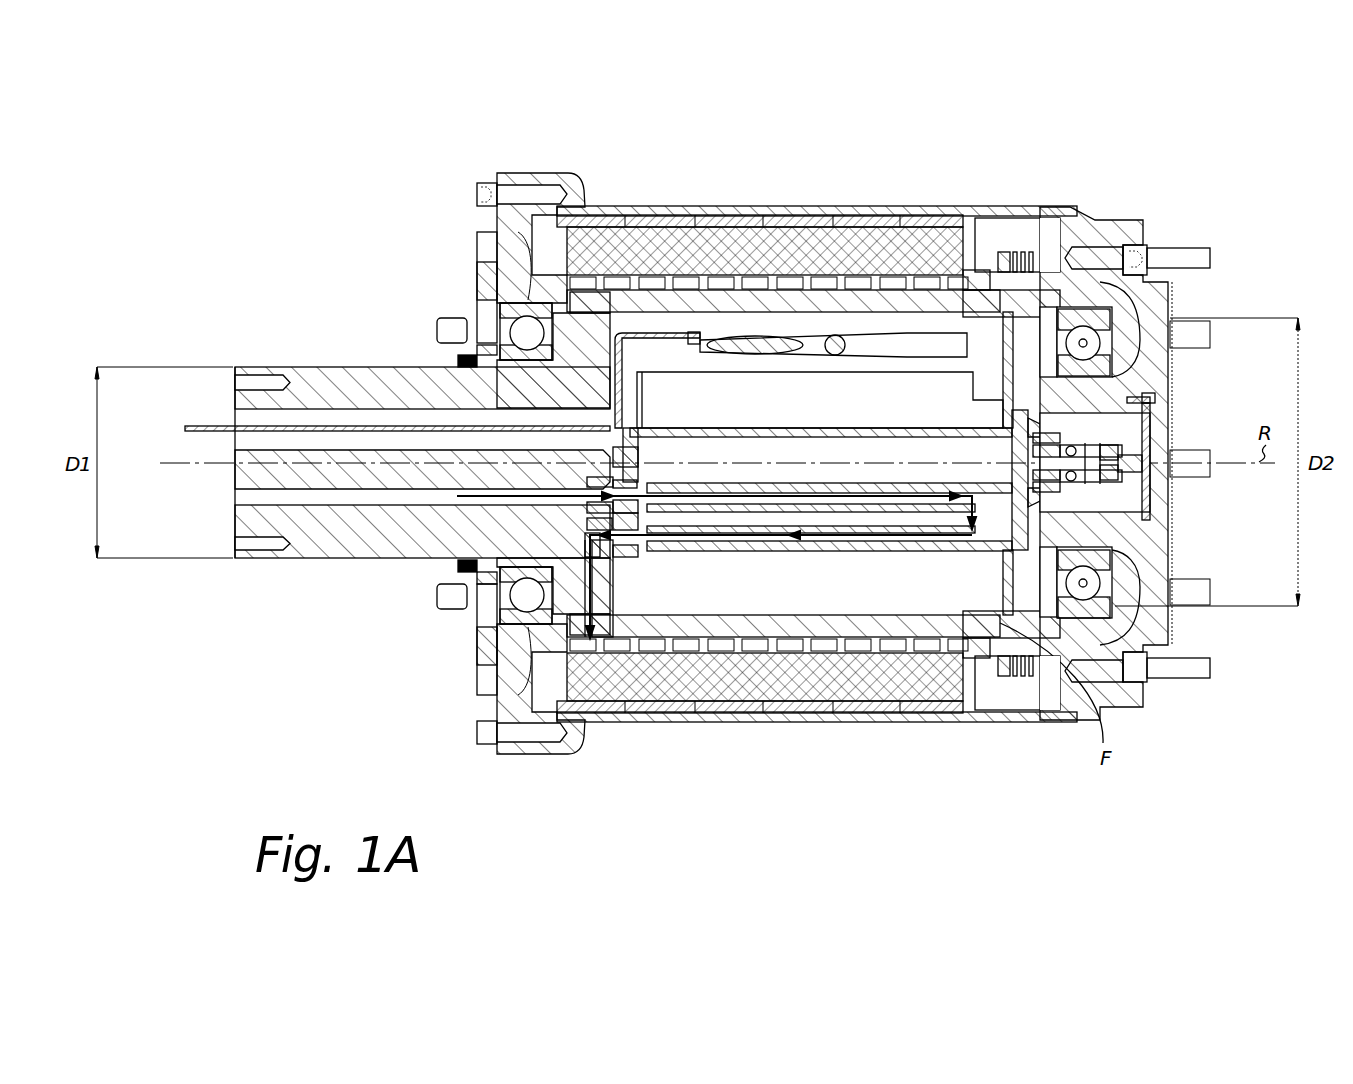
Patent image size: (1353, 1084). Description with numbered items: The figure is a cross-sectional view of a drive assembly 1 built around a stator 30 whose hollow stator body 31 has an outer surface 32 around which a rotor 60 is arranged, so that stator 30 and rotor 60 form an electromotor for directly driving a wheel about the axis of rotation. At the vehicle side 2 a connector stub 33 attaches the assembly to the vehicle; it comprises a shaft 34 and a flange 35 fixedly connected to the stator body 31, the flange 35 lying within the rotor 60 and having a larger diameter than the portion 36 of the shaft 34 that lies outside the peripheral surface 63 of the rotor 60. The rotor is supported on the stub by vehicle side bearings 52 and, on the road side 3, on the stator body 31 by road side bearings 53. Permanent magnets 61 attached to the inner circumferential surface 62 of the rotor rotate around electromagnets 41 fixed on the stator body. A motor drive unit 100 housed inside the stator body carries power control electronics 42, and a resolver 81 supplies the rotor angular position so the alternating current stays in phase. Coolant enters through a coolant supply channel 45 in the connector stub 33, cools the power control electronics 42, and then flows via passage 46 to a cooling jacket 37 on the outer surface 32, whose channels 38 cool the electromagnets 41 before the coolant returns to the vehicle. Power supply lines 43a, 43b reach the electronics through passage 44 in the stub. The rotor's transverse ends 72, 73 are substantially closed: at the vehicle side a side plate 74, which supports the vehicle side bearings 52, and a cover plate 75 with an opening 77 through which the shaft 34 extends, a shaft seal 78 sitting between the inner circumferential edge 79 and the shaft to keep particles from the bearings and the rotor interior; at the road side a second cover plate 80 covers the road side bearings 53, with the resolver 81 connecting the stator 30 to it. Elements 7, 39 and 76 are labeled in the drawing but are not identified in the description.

The drive assembly 1 is at (277, 287).
The vehicle side 2 is at (205, 406).
The road side 3 is at (1182, 412).
The bearing seat 7 is at (1118, 585).
The stator 30 is at (548, 600).
The hollow stator body 31 is at (927, 497).
The outer surface 32 is at (838, 655).
The connector stub 33 is at (320, 578).
The shaft 34 is at (298, 560).
The flange 35 is at (495, 256).
The portion of the shaft 36 is at (460, 340).
The cooling jacket 37 is at (822, 290).
The channels 38 is at (650, 640).
The rotor magnets 39 is at (800, 608).
The electromagnets 41 is at (870, 345).
The power control electronics 42 is at (672, 387).
The power supply line 43a is at (228, 426).
The power supply line 43b is at (900, 392).
The passage 44 is at (303, 417).
The coolant supply channel 45 is at (243, 497).
The passage 46 is at (592, 600).
The vehicle side bearings 52 is at (520, 333).
The road side bearings 53 is at (1083, 343).
The rotor 60 is at (1108, 205).
The permanent magnets 61 is at (668, 228).
The inner circumferential surface 62 is at (700, 228).
The peripheral surface 63 is at (740, 206).
The transverse end 72 is at (445, 274).
The transverse end 73 is at (1155, 237).
The side plate 74 is at (492, 222).
The cover plate 75 is at (493, 700).
The housing flange 76 is at (515, 640).
The opening 77 is at (478, 578).
The shaft seal 78 is at (462, 572).
The inner circumferential edge 79 is at (474, 580).
The second cover plate 80 is at (1172, 626).
The resolver 81 is at (1130, 467).
The motor drive unit 100 is at (978, 224).